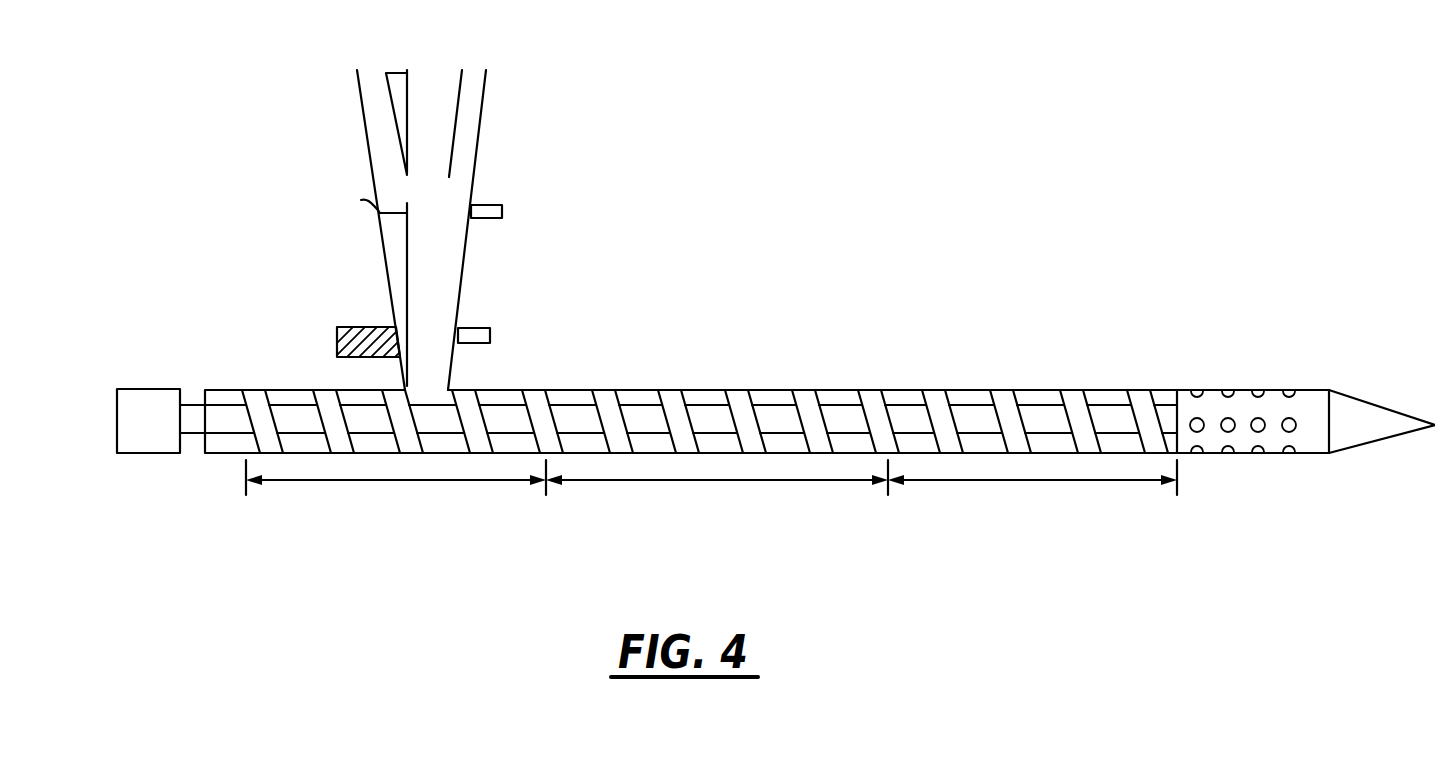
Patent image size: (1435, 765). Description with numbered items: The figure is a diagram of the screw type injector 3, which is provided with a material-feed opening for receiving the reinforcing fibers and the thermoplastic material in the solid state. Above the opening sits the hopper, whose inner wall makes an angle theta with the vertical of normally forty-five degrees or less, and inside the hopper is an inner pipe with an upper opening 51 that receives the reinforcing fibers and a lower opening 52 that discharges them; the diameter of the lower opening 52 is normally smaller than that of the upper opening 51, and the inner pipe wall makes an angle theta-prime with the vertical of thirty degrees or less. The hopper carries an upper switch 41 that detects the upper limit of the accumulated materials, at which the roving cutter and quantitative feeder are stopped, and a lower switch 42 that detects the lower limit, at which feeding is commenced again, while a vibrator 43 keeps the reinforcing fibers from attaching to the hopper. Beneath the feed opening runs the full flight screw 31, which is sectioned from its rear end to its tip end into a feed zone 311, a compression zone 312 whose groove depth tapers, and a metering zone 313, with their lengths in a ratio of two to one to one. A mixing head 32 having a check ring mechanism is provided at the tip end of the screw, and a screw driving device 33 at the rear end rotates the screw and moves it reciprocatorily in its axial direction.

The screw type injector 3 is at (668, 380).
The screw 31 is at (901, 392).
The mixing head 32 is at (1207, 396).
The screw driving device 33 is at (164, 434).
The upper switch 41 is at (502, 212).
The lower switch 42 is at (490, 328).
The vibrator 43 is at (340, 329).
The upper opening 51 is at (438, 66).
The lower opening 52 is at (440, 160).
The feed zone 311 is at (396, 489).
The compression zone 312 is at (717, 489).
The metering zone 313 is at (1032, 489).